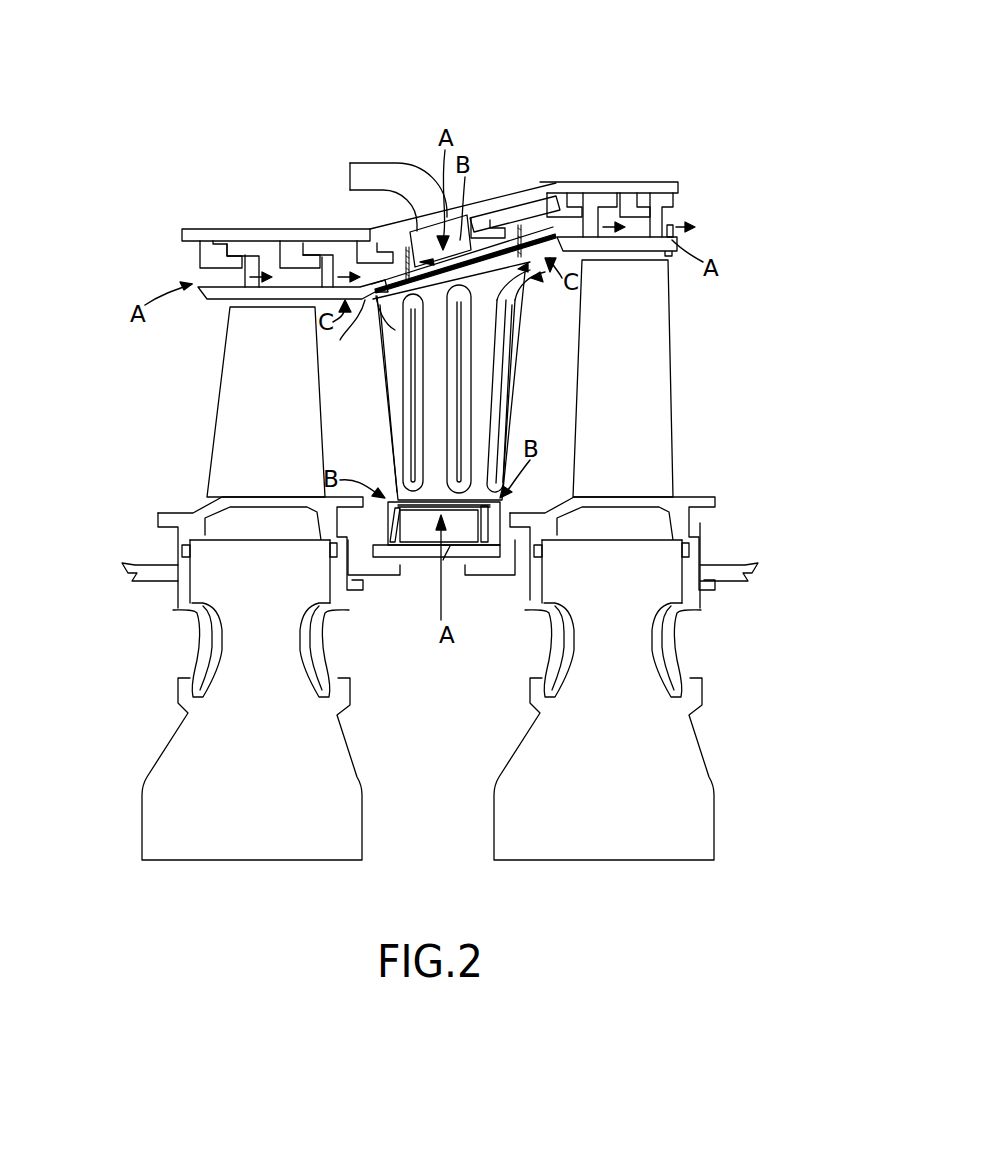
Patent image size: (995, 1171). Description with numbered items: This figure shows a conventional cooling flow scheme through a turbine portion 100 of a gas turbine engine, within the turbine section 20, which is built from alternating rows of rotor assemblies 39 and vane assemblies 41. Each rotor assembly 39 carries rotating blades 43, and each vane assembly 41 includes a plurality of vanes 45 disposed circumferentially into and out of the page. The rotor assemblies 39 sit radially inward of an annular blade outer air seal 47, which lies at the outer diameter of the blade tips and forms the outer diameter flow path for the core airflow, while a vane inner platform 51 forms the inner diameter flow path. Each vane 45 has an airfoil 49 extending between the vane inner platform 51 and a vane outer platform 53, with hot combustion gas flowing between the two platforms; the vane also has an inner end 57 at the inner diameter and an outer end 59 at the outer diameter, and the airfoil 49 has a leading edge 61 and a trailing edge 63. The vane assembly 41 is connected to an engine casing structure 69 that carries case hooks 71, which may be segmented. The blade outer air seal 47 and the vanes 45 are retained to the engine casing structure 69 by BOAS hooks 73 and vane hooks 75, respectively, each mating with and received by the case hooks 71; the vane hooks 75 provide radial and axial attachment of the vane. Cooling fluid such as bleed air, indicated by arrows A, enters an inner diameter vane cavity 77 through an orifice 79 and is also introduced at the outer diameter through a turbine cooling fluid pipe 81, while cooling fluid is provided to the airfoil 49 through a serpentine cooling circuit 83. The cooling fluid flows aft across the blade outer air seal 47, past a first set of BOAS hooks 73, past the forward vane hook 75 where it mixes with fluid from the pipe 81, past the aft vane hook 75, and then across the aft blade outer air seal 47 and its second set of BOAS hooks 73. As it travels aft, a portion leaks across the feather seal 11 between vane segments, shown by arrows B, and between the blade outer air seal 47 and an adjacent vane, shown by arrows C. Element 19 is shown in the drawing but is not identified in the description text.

The feather seal 11 is at (360, 308).
The stator vane 19 is at (395, 432).
The turbine section 20 is at (758, 54).
The turbine portion 100 is at (680, 82).
The rotor assembly 39 is at (129, 821).
The vane assembly 41 is at (518, 380).
The rotating blade 43 is at (440, 378).
The vane 45 is at (510, 408).
The blade outer air seal 47 is at (212, 301).
The airfoil 49 is at (203, 497).
The vane inner platform 51 is at (488, 520).
The vane outer platform 53 is at (558, 250).
The inner end 57 is at (392, 528).
The outer end 59 is at (375, 305).
The leading edge 61 is at (388, 400).
The trailing edge 63 is at (512, 380).
The engine casing structure 69 is at (620, 183).
The case hook 71 is at (205, 243).
The BOAS hook 73 is at (290, 252).
The vane hook 75 is at (392, 230).
The inner diameter vane cavity 77 is at (431, 538).
The orifice 79 is at (452, 548).
The turbine cooling fluid (TCA) pipe 81 is at (396, 163).
The serpentine cooling circuit 83 is at (503, 350).